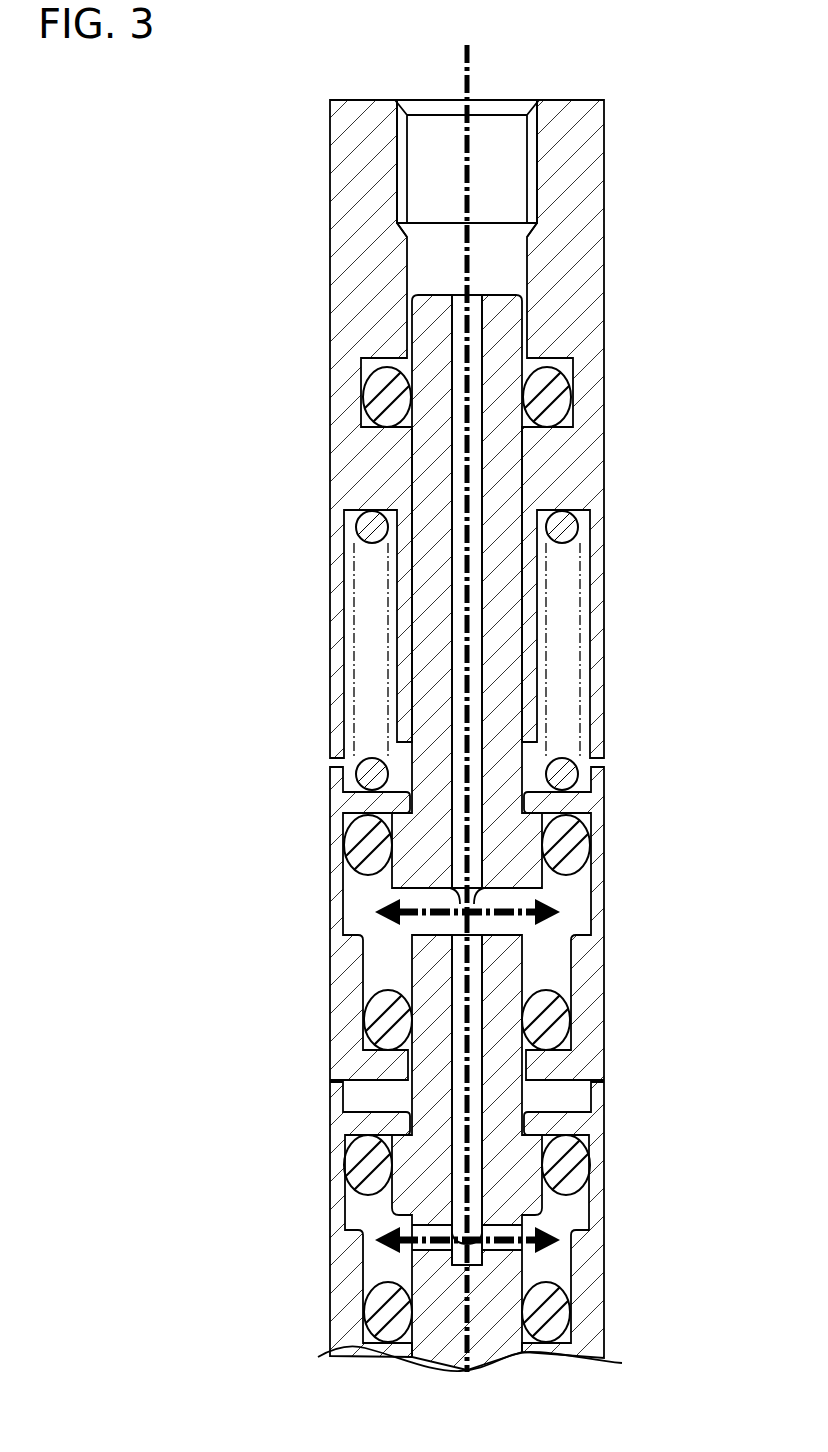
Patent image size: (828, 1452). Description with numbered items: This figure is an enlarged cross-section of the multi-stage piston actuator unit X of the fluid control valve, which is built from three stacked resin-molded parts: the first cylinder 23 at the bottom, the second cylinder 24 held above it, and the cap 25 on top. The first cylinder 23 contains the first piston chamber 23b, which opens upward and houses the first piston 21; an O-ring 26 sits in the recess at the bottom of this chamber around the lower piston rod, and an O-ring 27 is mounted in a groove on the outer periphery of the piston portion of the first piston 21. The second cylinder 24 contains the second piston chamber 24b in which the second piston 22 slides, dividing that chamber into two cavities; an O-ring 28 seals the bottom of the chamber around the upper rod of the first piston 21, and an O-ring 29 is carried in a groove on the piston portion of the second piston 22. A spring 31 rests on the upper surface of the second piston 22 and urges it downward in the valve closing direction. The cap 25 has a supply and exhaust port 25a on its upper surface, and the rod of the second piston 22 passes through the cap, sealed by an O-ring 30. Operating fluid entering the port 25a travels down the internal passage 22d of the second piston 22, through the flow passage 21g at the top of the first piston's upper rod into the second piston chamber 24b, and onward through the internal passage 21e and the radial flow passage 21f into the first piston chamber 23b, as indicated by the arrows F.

The first piston 21 is at (423, 1110).
The internal passage 21e is at (455, 1100).
The flow passage 21f is at (505, 1250).
The flow passage 21g is at (505, 930).
The second piston 22 is at (427, 633).
The internal passage 22d is at (450, 497).
The first cylinder 23 is at (345, 1293).
The first piston chamber 23b is at (343, 1223).
The second cylinder 24 is at (338, 983).
The second piston chamber 24b is at (347, 910).
The cap 25 is at (345, 280).
The supply and exhaust port 25a is at (518, 190).
The O-ring 26 is at (555, 1308).
The O-ring 27 is at (566, 1169).
The O-ring 28 is at (555, 1032).
The O-ring 29 is at (570, 842).
The O-ring 30 is at (563, 406).
The spring 31 is at (569, 600).
The arrows F is at (462, 57).
The multi-stage piston actuator unit X is at (258, 157).